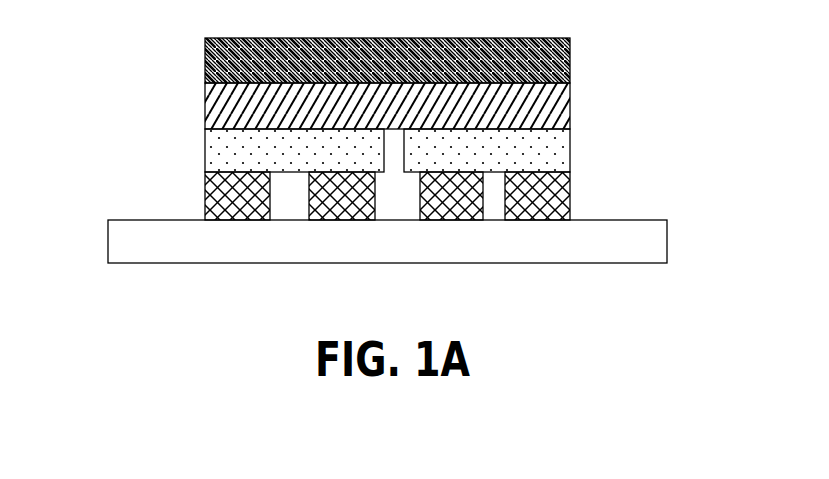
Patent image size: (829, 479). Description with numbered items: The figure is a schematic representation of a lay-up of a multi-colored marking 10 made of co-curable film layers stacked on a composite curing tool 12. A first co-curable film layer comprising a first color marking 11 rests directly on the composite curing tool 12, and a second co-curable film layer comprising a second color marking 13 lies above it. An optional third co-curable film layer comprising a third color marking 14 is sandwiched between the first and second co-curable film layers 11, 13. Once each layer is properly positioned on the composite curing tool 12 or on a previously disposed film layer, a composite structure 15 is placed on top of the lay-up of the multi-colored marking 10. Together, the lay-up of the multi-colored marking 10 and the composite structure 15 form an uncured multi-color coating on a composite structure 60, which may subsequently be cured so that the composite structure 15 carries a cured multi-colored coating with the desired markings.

The lay-up of multi-colored marking 10 is at (406, 151).
The first color marking 11 is at (210, 195).
The composite curing tool 12 is at (119, 240).
The second color marking 13 is at (213, 100).
The third color marking 14 is at (213, 150).
The composite structure 15 is at (206, 50).
The uncured multi-color coating on a composite structure 60 is at (447, 129).